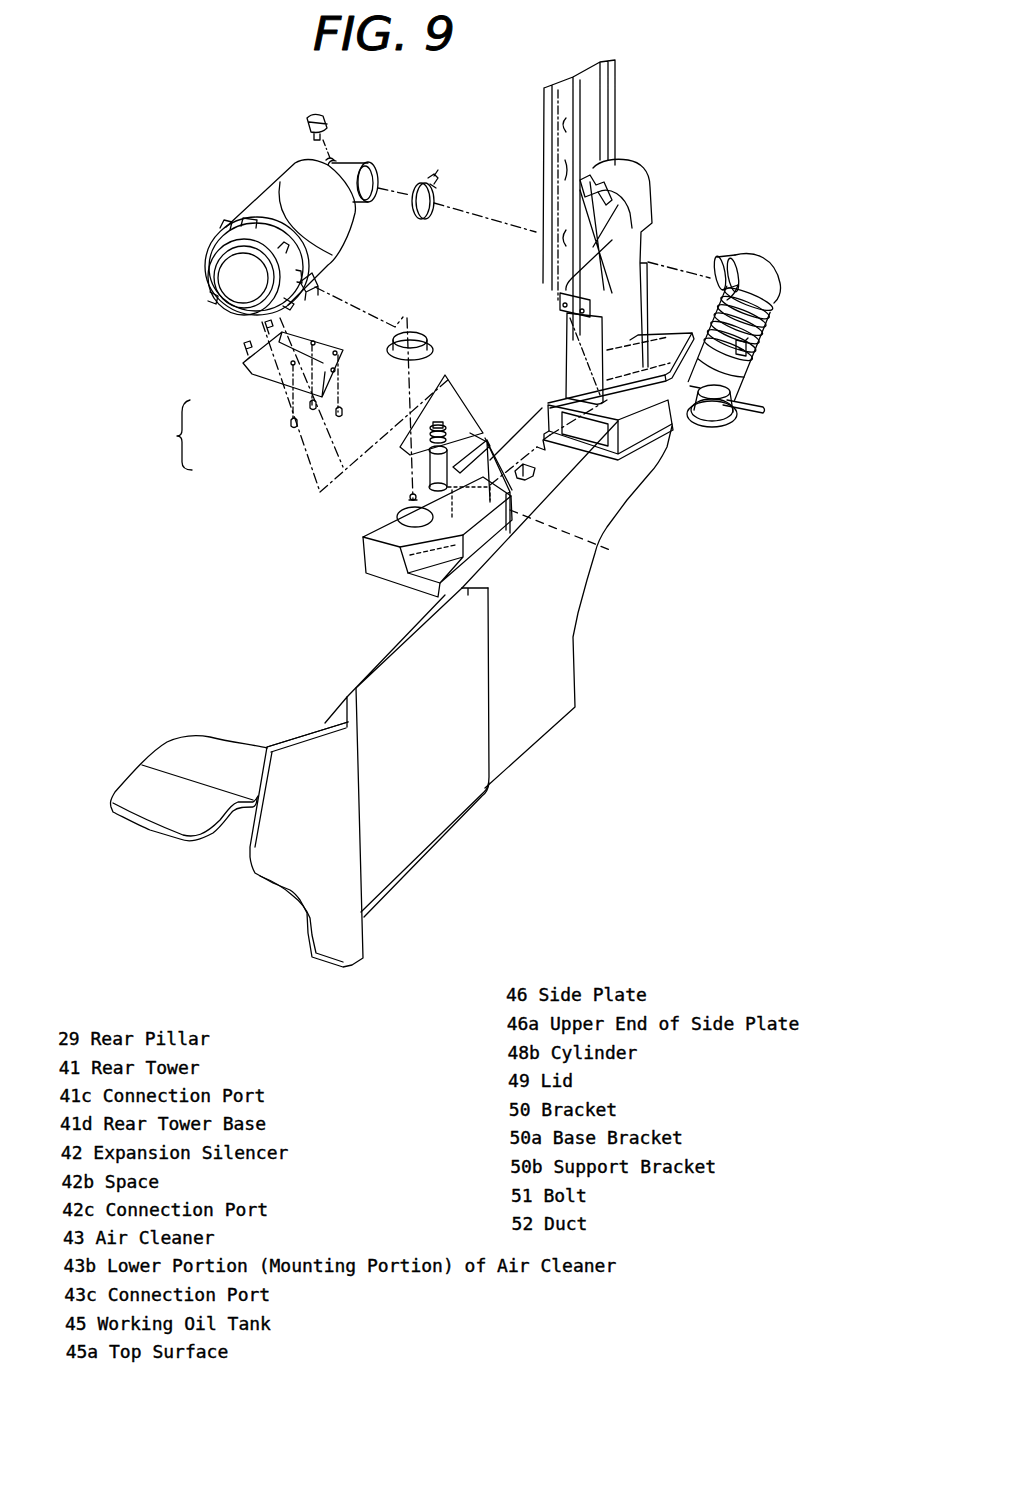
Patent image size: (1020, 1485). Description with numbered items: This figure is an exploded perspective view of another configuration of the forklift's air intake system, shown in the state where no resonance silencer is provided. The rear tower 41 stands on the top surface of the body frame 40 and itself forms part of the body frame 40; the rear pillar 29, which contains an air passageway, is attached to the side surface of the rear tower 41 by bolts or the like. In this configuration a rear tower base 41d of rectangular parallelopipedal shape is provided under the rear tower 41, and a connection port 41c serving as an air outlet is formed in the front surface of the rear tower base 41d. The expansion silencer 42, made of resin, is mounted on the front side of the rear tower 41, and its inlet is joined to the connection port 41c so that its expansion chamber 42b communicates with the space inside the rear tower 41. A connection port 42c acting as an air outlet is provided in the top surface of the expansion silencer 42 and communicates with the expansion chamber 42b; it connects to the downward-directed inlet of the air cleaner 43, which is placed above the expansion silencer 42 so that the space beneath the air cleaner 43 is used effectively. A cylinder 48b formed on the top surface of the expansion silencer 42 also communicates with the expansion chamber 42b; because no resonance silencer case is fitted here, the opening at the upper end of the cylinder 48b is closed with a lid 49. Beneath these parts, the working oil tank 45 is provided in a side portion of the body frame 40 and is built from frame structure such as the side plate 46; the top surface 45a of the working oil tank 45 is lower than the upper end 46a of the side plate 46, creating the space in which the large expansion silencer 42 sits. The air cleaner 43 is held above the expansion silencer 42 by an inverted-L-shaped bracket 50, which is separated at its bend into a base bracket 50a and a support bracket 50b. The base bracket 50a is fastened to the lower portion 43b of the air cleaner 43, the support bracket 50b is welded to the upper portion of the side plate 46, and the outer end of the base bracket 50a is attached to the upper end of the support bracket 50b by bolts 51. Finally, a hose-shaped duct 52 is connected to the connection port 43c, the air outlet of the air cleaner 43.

The rear pillar 29 is at (548, 146).
The body frame 40 is at (549, 748).
The rear tower 41 is at (536, 298).
The connection port 41c is at (585, 421).
The rear tower base 41d is at (585, 390).
The expansion silencer 42 is at (460, 537).
The expansion chamber 42b is at (587, 542).
The connection port 42c is at (407, 516).
The air cleaner 43 is at (370, 303).
The lower portion (mounting portion) of air cleaner 43b is at (320, 287).
The connection port 43c is at (364, 183).
The working oil tank 45 is at (529, 658).
The top surface 45a is at (548, 464).
The side plate 46 is at (492, 447).
The upper end of side plate 46a is at (528, 428).
The cylinder 48b is at (440, 459).
The lid 49 is at (436, 371).
The bracket 50 is at (313, 412).
The base bracket 50a is at (273, 377).
The support bracket 50b is at (407, 443).
The bolts 51 is at (244, 346).
The duct 52 is at (759, 266).